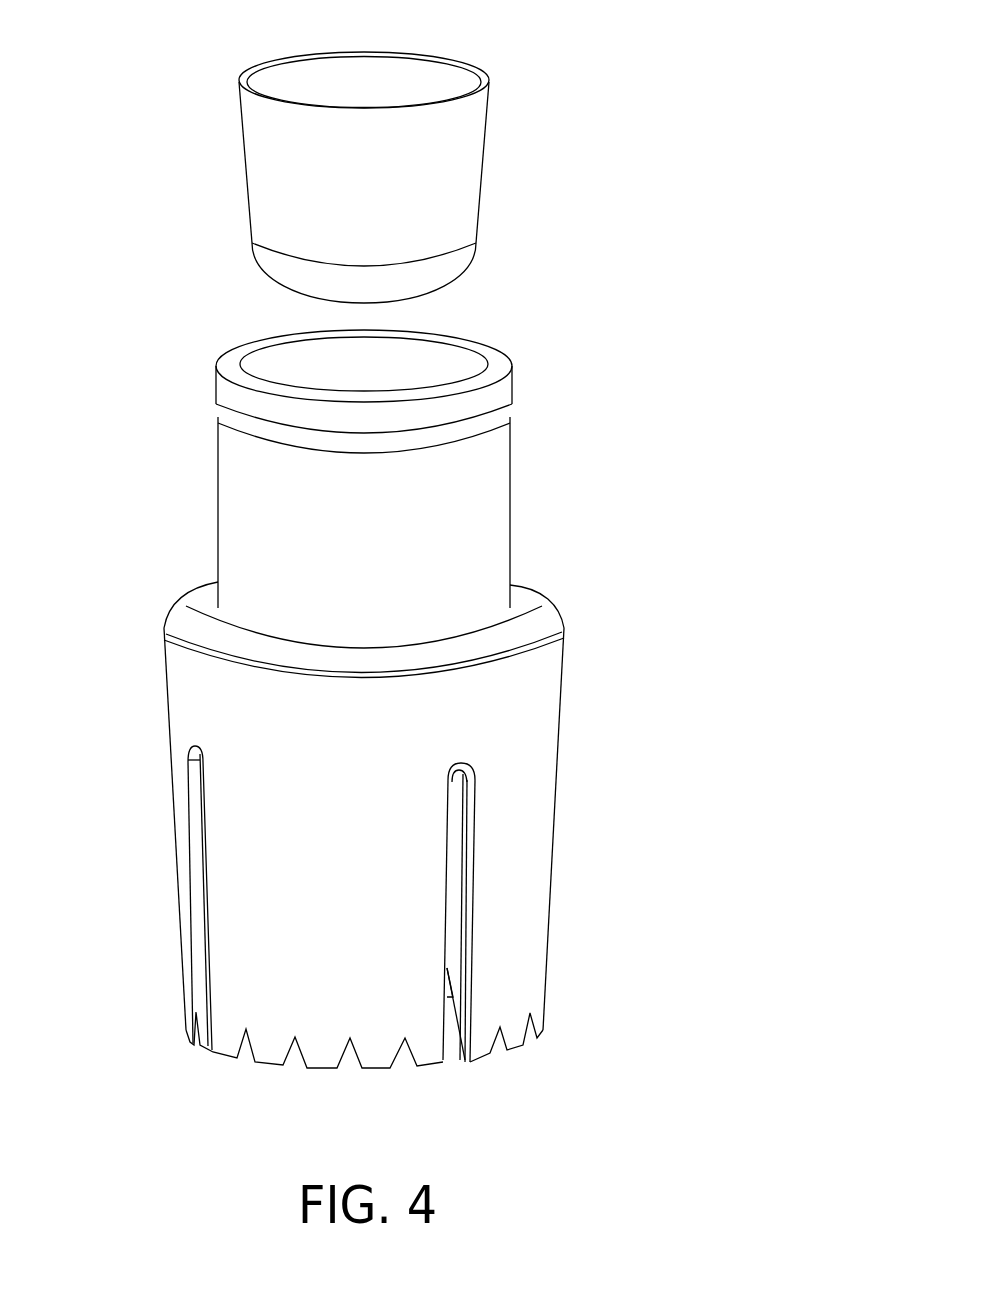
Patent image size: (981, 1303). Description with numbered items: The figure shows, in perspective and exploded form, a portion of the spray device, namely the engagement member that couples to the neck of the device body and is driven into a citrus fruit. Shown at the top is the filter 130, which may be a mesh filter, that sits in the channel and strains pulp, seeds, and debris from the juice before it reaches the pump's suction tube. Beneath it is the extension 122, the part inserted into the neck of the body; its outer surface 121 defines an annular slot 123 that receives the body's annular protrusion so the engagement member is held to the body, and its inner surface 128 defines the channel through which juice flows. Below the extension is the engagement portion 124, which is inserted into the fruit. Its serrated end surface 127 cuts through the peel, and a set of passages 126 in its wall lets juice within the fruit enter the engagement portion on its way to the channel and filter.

The filter 130 is at (470, 166).
The inner surface 128 is at (452, 360).
The annular slot 123 is at (227, 420).
The extension 122 is at (495, 521).
The outer surface 121 is at (183, 634).
The engagement portion 124 is at (547, 710).
The passages 126 is at (458, 841).
The serrated end surface 127 is at (500, 1043).